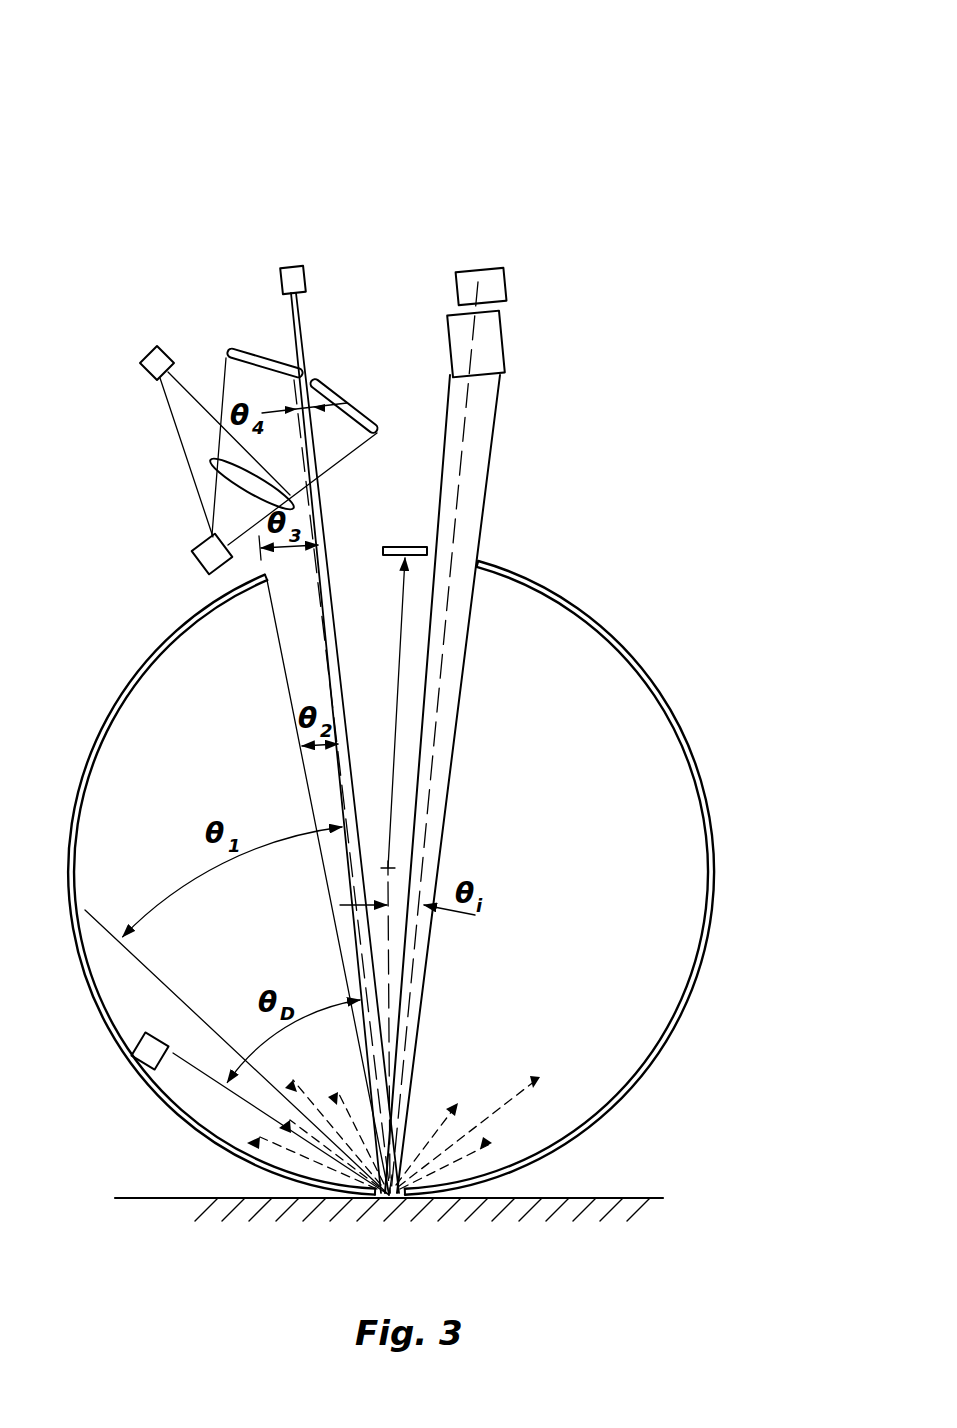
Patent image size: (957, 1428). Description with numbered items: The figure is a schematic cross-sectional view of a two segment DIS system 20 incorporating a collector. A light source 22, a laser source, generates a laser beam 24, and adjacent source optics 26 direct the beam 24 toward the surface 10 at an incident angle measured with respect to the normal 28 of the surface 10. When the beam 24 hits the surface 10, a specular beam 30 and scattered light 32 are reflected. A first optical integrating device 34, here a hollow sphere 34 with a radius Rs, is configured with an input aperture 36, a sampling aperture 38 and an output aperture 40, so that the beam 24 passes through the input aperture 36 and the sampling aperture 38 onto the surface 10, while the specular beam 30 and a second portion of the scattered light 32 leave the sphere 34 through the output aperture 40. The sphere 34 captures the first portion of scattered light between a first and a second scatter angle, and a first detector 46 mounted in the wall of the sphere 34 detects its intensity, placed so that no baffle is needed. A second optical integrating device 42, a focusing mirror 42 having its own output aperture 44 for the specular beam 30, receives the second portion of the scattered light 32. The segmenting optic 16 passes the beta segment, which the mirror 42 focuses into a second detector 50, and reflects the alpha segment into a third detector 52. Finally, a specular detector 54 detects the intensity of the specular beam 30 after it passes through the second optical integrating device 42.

The surface 10 is at (600, 1196).
The segmenting optic 16 is at (207, 476).
The DIS system 20 is at (236, 150).
The light source 22 is at (497, 287).
The laser beam 24 is at (478, 490).
The source optics 26 is at (492, 348).
The normal 28 is at (388, 862).
The specular beam 30 is at (333, 652).
The scattered light 32 is at (538, 1078).
The first optical integrating device 34 is at (660, 686).
The input aperture 36 is at (478, 564).
The sampling aperture 38 is at (376, 1200).
The output aperture 40 is at (360, 548).
The second optical integrating device 42 is at (372, 425).
The output aperture 44 is at (312, 380).
The first detector 46 is at (148, 1051).
The second detector 50 is at (215, 550).
The third detector 52 is at (147, 358).
The specular detector 54 is at (283, 275).